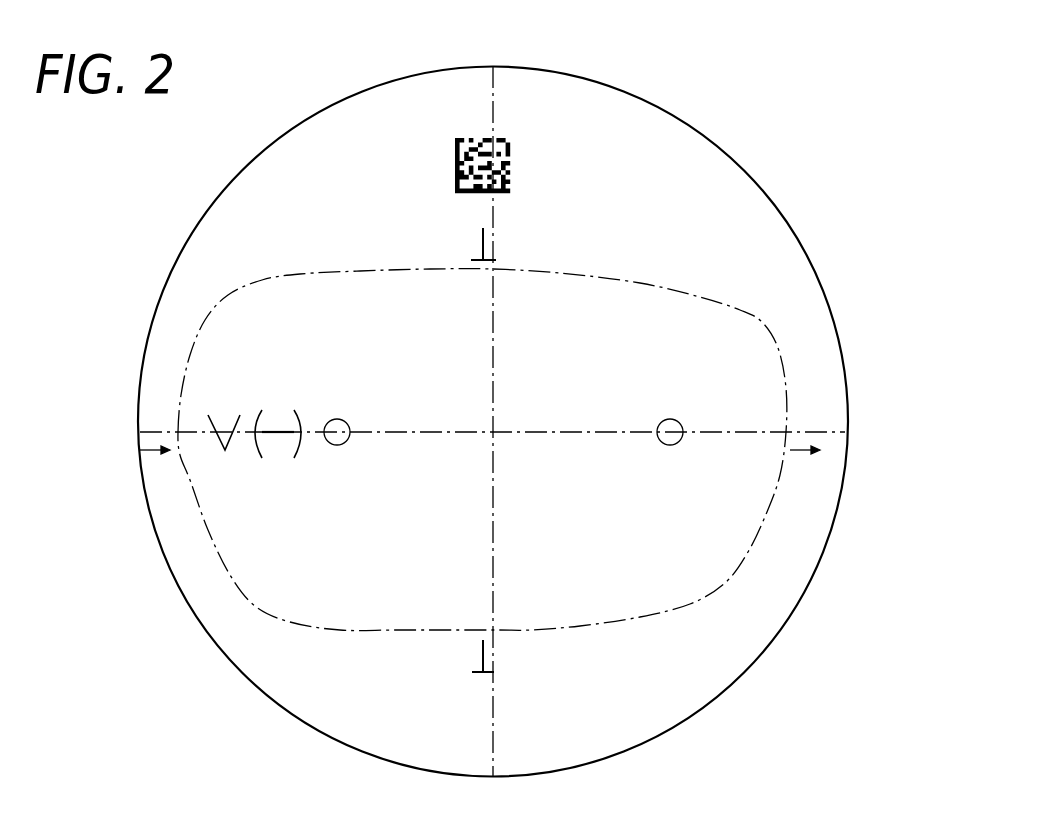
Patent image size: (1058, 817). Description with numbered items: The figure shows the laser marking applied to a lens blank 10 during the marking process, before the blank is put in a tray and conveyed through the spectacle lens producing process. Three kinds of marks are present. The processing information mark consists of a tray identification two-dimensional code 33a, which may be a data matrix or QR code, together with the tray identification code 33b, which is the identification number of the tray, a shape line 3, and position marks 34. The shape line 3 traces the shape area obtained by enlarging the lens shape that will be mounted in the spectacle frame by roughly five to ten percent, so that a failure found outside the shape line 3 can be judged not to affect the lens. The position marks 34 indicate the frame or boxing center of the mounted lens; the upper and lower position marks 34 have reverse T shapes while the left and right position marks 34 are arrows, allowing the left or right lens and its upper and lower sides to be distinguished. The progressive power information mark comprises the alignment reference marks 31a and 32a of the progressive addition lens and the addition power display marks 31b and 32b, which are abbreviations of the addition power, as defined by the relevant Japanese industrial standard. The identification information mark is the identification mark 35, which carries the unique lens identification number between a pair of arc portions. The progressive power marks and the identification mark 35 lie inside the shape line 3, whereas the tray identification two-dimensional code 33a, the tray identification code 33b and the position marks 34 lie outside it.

The lens blank 10 is at (688, 120).
The shape line 3 is at (768, 318).
The alignment reference mark 31a is at (328, 421).
The addition power display mark 31b is at (340, 478).
The alignment reference mark 32a is at (683, 427).
The addition power display mark 32b is at (672, 478).
The tray identification 2D code 33a is at (502, 138).
The tray identification code 33b is at (515, 193).
The position marks 34 is at (480, 242).
The identification mark 35 is at (273, 393).